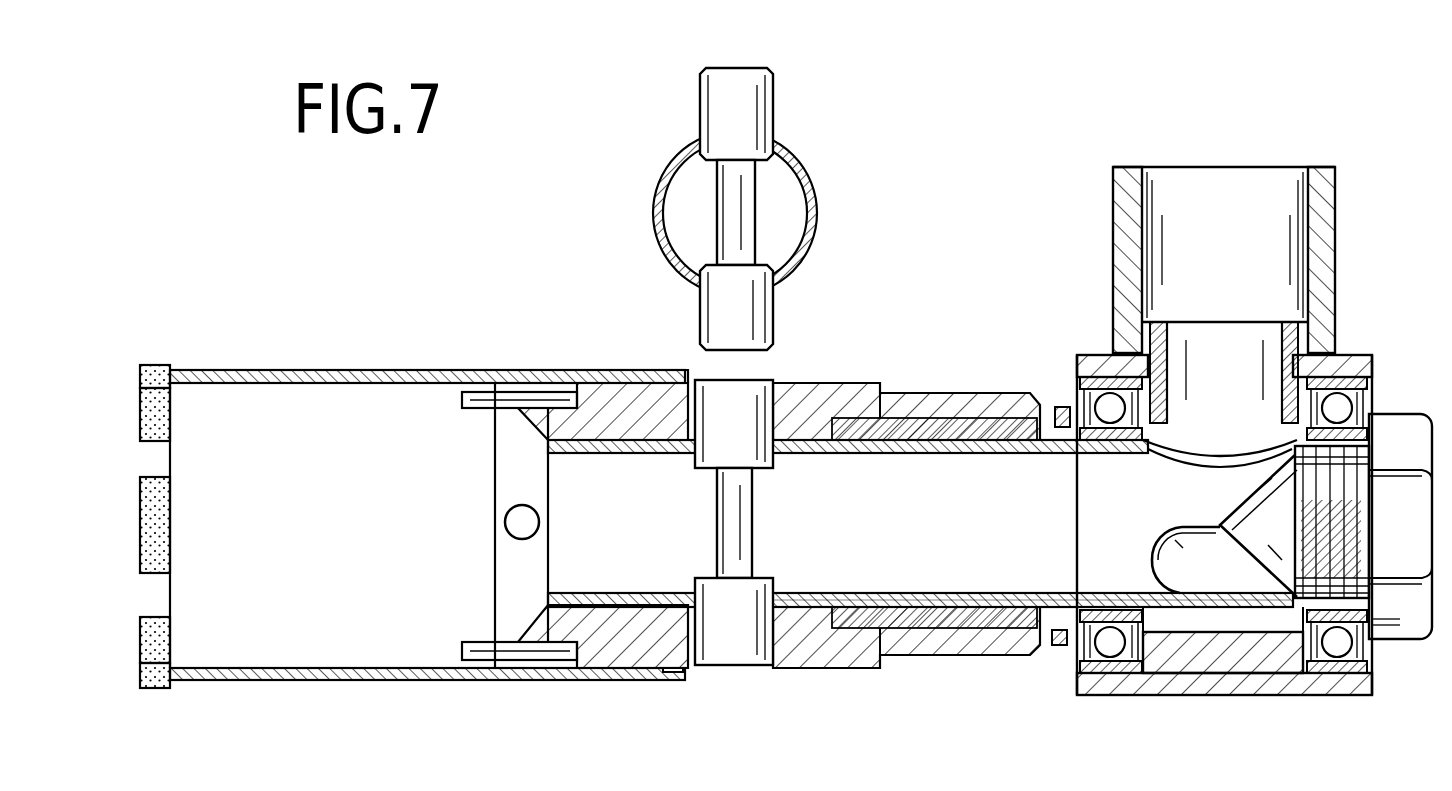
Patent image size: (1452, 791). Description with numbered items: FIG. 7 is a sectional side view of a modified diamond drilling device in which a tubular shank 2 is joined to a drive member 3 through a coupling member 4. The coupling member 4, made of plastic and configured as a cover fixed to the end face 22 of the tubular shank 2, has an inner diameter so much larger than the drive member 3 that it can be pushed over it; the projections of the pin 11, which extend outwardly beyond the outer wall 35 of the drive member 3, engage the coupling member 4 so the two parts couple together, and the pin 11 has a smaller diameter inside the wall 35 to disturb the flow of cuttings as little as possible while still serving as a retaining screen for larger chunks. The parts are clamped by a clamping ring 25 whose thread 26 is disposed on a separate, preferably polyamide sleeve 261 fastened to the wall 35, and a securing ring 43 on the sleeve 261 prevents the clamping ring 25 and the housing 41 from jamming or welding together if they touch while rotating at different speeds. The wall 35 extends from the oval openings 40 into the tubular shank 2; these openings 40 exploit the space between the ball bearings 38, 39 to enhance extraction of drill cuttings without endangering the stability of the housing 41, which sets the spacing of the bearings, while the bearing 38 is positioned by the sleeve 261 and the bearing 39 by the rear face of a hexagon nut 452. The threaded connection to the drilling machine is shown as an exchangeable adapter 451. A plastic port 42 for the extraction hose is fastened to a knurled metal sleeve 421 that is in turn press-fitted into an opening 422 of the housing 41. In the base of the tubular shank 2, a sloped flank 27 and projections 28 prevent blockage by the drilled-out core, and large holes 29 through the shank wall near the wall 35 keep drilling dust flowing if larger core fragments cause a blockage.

The tubular shank 2 is at (298, 645).
The drive member 3 is at (1030, 362).
The coupling member 4 is at (638, 653).
The pin 11 is at (748, 305).
The end face 22 is at (677, 370).
The clamping ring 25 is at (933, 650).
The thread 26 is at (997, 638).
The sleeve 261 is at (958, 605).
The sloped flank 27 is at (524, 620).
The projections 28 is at (470, 652).
The holes 29 is at (515, 527).
The wall of the drive member 35 is at (597, 598).
The ball bearing 38 is at (1100, 660).
The ball bearing 39 is at (1340, 673).
The openings 40 is at (1185, 455).
The housing 41 is at (1212, 673).
The port 42 is at (1195, 255).
The metal sleeve 421 is at (1163, 323).
The opening of the housing 422 is at (1148, 380).
The securing ring 43 is at (1065, 647).
The exchangeable adapter 451 is at (1334, 475).
The hexagon nut 452 is at (1400, 647).